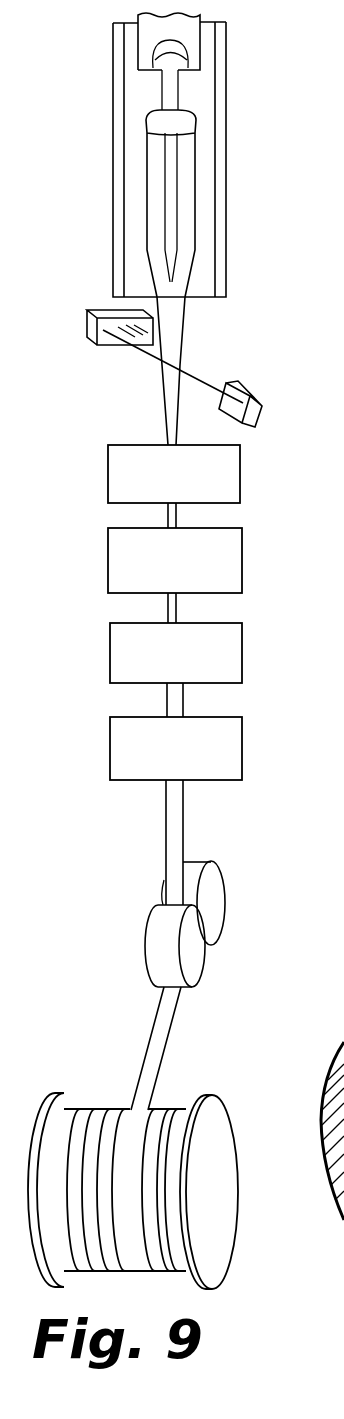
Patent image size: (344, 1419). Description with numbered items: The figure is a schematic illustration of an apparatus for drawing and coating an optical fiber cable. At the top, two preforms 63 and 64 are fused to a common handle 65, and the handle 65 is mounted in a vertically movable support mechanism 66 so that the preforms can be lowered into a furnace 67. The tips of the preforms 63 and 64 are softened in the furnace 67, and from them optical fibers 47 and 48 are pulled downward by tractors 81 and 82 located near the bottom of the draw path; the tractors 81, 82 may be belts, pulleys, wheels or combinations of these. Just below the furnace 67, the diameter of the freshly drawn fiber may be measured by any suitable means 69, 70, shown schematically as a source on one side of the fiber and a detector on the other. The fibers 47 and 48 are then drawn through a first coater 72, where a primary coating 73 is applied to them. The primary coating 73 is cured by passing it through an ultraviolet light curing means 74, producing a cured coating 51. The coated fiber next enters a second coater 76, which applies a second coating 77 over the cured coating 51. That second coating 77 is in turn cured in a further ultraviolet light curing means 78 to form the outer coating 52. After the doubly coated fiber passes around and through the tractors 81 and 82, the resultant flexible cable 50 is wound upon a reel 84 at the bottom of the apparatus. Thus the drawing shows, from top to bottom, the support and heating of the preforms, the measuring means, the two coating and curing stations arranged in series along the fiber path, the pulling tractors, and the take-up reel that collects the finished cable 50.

The optical fiber 47 is at (167, 398).
The optical fiber 48 is at (185, 335).
The cable 50 is at (172, 1048).
The cured coating 51 is at (176, 605).
The outer coating 52 is at (178, 813).
The preform 63 is at (157, 197).
The preform 64 is at (185, 197).
The handle 65 is at (172, 92).
The vertically movable support mechanism 66 is at (188, 33).
The furnace 67 is at (225, 257).
The fiber diameter measuring means 69 is at (250, 392).
The fiber diameter measuring means 70 is at (87, 322).
The first coater 72 is at (242, 470).
The primary coating 73 is at (176, 516).
The ultraviolet light curing means 74 is at (243, 558).
The second coater 76 is at (242, 650).
The second coating 77 is at (183, 700).
The ultraviolet light curing means 78 is at (243, 746).
The tractor 81 is at (217, 893).
The tractor 82 is at (197, 963).
The reel 84 is at (223, 1140).